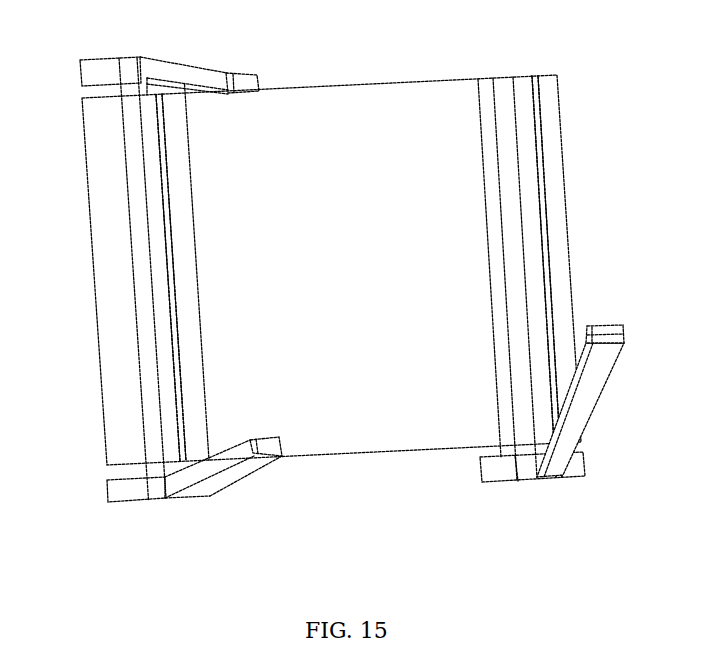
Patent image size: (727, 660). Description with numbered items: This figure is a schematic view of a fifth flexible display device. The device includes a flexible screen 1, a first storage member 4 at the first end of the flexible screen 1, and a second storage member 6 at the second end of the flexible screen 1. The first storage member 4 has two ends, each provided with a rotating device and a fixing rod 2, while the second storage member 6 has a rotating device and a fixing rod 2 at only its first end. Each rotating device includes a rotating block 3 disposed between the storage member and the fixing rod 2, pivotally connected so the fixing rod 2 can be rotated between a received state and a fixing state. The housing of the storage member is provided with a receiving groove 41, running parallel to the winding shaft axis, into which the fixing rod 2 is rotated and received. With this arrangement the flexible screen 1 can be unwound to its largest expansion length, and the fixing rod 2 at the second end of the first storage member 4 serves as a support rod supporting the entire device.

The flexible screen 1 is at (315, 105).
The fixing rod 2 is at (190, 73).
The rotating block 3 is at (487, 533).
The first storage member 4 is at (117, 252).
The receiving groove 41 is at (173, 387).
The second storage member 6 is at (560, 275).